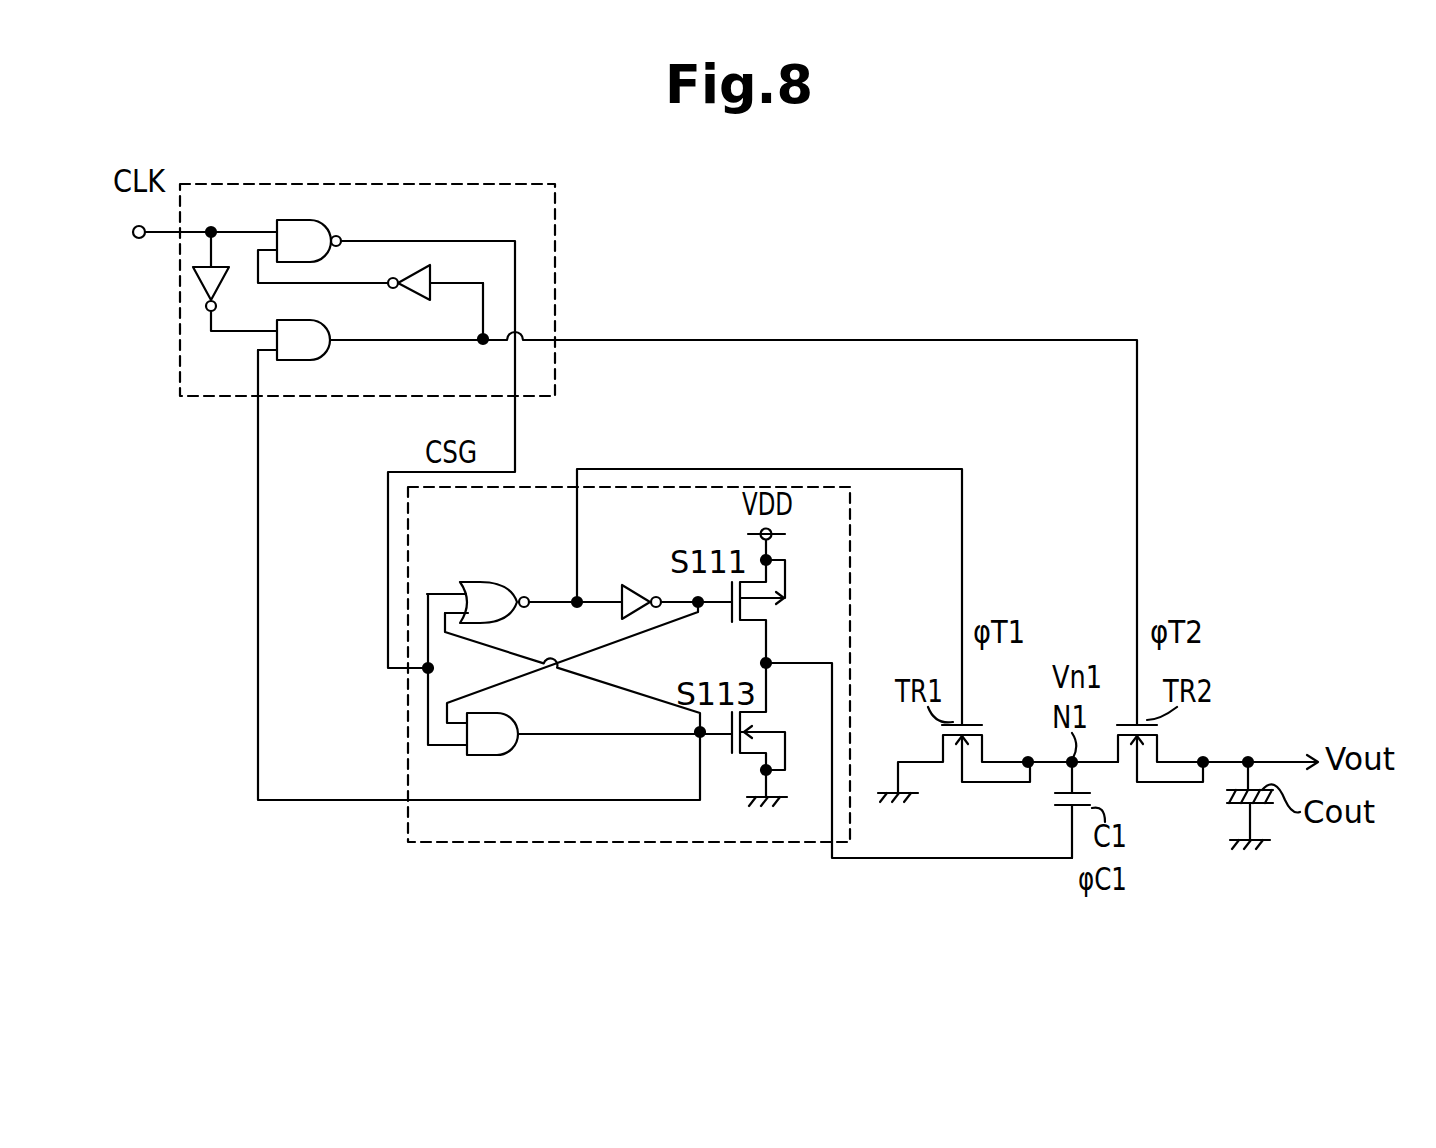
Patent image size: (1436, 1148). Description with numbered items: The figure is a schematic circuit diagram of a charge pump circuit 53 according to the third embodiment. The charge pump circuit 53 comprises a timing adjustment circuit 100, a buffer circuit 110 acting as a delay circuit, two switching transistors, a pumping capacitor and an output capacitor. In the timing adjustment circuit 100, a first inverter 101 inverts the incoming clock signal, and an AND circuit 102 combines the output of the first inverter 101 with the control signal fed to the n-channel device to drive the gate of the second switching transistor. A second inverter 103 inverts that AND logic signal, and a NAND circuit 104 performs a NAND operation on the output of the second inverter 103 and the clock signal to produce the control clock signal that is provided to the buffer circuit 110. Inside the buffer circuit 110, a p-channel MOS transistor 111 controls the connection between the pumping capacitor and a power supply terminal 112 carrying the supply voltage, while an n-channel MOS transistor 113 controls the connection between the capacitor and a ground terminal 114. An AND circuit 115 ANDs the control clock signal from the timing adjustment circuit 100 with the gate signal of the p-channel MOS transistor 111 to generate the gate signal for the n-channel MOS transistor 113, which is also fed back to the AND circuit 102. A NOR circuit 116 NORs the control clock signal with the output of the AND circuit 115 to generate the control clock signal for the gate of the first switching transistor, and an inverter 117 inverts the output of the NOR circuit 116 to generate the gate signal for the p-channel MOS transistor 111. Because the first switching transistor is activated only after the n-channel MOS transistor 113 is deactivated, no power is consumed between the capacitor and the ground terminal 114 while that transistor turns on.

The charge pump circuit 53 is at (1175, 218).
The timing adjustment circuit 100 is at (556, 238).
The first inverter 101 is at (225, 277).
The AND circuit 102 is at (330, 357).
The second inverter 103 is at (417, 298).
The NAND circuit 104 is at (326, 221).
The buffer circuit 110 is at (605, 842).
The p-channel MOS transistor 111 is at (737, 628).
The power supply terminal 112 is at (773, 533).
The n-channel MOS transistor 113 is at (745, 757).
The ground terminal 114 is at (780, 797).
The AND circuit 115 is at (490, 713).
The NOR circuit 116 is at (513, 562).
The inverter 117 is at (630, 583).